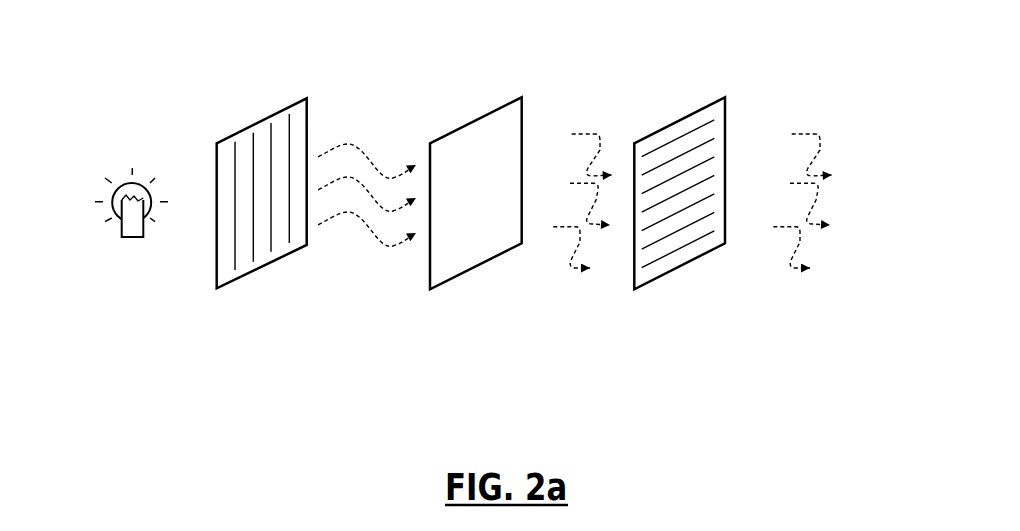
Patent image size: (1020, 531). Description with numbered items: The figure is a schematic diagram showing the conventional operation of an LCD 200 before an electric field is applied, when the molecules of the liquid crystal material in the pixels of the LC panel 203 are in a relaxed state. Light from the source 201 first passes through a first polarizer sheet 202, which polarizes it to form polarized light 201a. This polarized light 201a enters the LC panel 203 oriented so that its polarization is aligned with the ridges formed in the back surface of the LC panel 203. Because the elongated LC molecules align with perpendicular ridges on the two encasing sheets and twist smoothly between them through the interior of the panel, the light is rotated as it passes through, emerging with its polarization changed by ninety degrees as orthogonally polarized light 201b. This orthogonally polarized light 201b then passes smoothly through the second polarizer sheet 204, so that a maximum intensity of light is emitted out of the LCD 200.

The LCD 200 is at (272, 473).
The source 201 is at (107, 264).
The polarized light 201a is at (375, 117).
The orthogonally polarized light 201b is at (598, 112).
The first polarizer sheet 202 is at (258, 282).
The LC panel 203 is at (477, 283).
The second polarizer sheet 204 is at (678, 283).